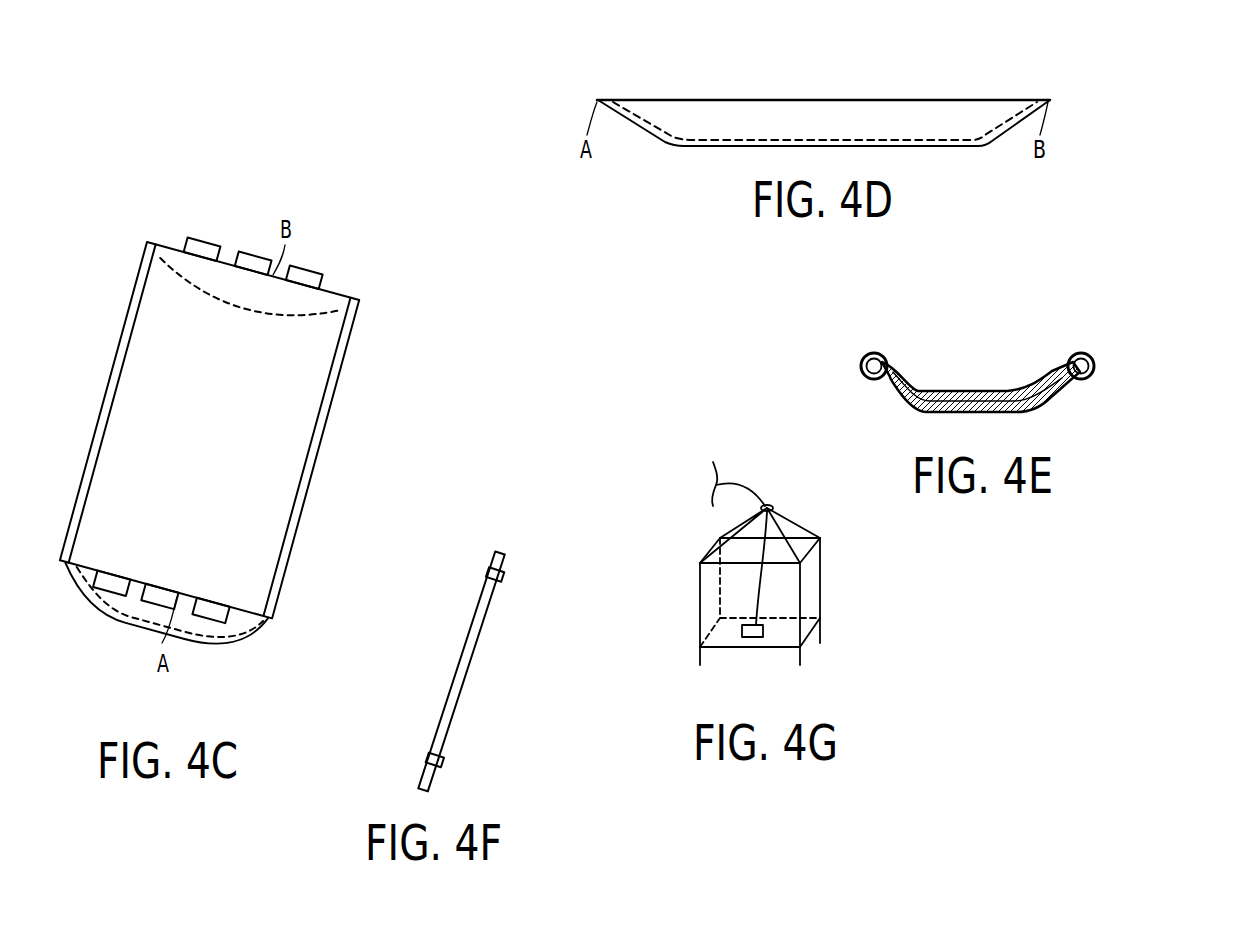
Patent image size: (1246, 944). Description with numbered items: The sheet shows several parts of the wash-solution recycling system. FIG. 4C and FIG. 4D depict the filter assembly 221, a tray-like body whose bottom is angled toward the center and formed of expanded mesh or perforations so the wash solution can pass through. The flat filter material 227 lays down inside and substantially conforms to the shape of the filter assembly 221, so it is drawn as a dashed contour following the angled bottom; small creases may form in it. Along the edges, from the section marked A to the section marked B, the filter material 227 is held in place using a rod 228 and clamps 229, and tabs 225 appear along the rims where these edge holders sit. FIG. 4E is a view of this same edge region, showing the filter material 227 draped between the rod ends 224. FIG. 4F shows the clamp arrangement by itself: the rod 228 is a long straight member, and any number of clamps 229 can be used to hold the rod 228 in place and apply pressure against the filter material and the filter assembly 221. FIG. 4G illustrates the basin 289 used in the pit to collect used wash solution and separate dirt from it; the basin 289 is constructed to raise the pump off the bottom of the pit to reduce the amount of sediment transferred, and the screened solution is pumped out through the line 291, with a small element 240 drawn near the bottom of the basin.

In FIG. 4C, the filter assembly 221 is at (60, 562).
In FIG. 4E, the strap attachment end 224 is at (862, 370).
In FIG. 4C, the connection tabs 225 is at (208, 237).
In FIG. 4D, the connection tabs 225 is at (598, 98).
In FIG. 4C, the filter material 227 is at (132, 617).
In FIG. 4D, the filter material 227 is at (710, 148).
In FIG. 4E, the filter material 227 is at (1010, 388).
In FIG. 4E, the rod 228 is at (880, 352).
In FIG. 4F, the rod 228 is at (457, 668).
In FIG. 4F, the clamp 229 is at (508, 580).
In FIG. 4G, the weight element 240 is at (750, 637).
In FIG. 4G, the basin 289 is at (822, 588).
In FIG. 4G, the line 291 is at (752, 607).